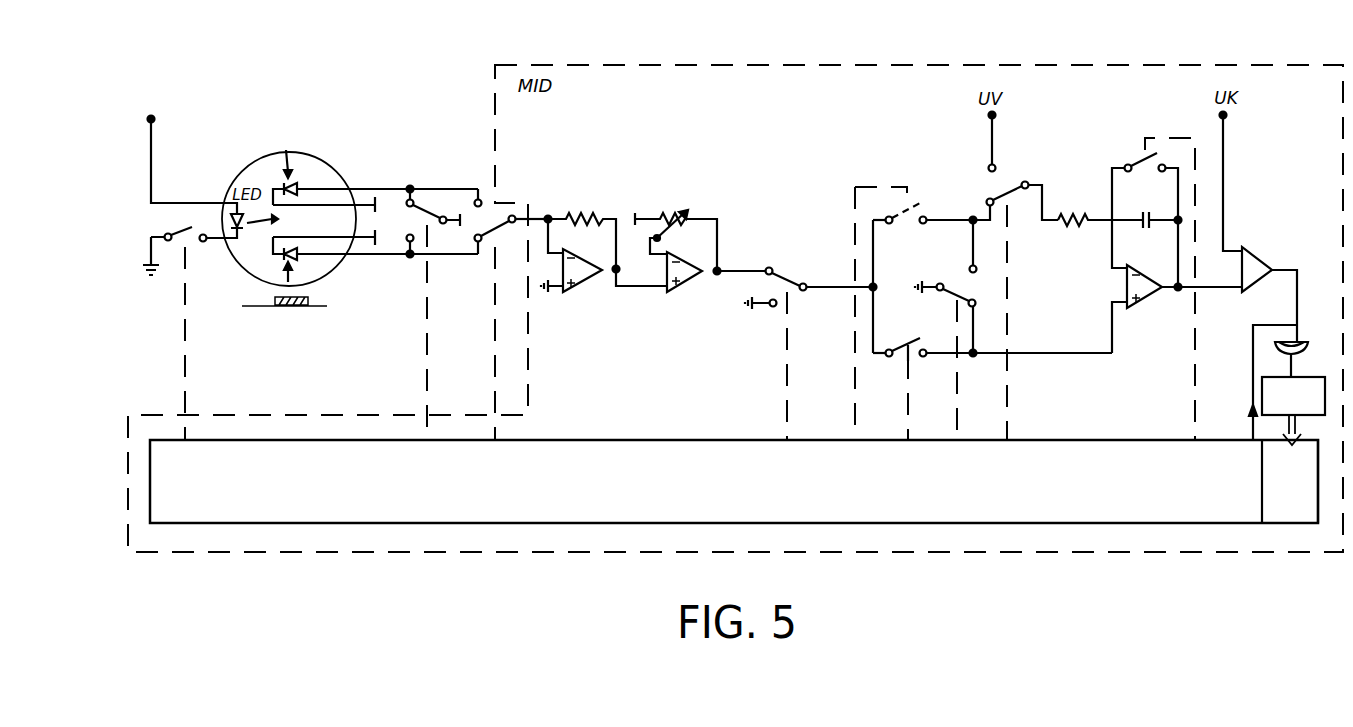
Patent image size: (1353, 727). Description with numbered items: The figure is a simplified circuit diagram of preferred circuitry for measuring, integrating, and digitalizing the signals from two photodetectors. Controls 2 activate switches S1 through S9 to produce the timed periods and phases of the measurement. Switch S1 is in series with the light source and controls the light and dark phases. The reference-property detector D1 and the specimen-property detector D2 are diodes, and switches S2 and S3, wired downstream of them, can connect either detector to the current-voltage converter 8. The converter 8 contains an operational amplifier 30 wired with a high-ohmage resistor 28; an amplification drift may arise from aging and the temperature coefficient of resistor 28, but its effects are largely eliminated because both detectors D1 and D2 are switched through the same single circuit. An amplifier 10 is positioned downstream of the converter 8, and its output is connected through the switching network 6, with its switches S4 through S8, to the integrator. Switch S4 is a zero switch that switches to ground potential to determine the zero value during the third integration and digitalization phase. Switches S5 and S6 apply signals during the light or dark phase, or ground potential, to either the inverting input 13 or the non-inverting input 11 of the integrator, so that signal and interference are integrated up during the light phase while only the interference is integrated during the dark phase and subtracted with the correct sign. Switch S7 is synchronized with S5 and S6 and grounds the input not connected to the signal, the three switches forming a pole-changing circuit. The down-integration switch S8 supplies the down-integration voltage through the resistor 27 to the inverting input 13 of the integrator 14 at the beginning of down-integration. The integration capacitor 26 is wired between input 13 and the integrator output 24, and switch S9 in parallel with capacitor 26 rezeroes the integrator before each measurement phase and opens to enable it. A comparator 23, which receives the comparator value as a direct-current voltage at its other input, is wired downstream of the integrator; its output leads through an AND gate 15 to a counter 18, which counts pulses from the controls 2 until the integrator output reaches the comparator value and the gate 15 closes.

The controls 2 is at (641, 515).
The switching network 6 is at (901, 184).
The current-voltage converter 8 is at (558, 212).
The amplifier 10 is at (680, 278).
The non-inverting input 11 is at (1125, 303).
The inverting input 13 is at (1125, 268).
The integrator 14 is at (1278, 500).
The AND gate 15 is at (1285, 350).
The counter 18 is at (1262, 400).
The comparator 23 is at (1256, 264).
The integrator output 24 is at (1167, 296).
The integration capacitor 26 is at (1145, 212).
The resistor 27 is at (1073, 216).
The high-ohmage resistor 28 is at (583, 215).
The operational amplifier 30 is at (585, 277).
The reference-property detector D1 is at (294, 185).
The specimen-property detector D2 is at (297, 258).
The switch S1 is at (169, 346).
The switch S2 is at (434, 326).
The switch S3 is at (512, 327).
The zero switch S4 is at (795, 367).
The switch S5 is at (906, 326).
The switch S6 is at (992, 401).
The switch S7 is at (946, 341).
The down-integration switch S8 is at (1015, 324).
The switch S9 is at (1187, 330).